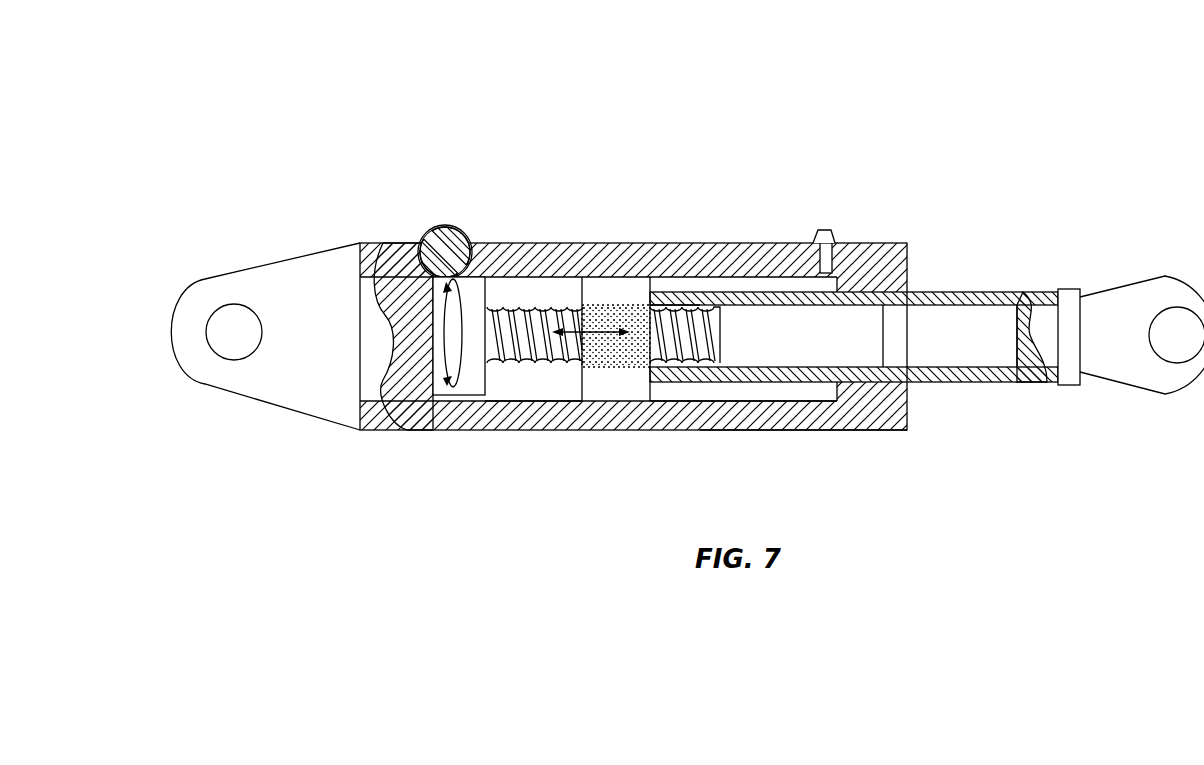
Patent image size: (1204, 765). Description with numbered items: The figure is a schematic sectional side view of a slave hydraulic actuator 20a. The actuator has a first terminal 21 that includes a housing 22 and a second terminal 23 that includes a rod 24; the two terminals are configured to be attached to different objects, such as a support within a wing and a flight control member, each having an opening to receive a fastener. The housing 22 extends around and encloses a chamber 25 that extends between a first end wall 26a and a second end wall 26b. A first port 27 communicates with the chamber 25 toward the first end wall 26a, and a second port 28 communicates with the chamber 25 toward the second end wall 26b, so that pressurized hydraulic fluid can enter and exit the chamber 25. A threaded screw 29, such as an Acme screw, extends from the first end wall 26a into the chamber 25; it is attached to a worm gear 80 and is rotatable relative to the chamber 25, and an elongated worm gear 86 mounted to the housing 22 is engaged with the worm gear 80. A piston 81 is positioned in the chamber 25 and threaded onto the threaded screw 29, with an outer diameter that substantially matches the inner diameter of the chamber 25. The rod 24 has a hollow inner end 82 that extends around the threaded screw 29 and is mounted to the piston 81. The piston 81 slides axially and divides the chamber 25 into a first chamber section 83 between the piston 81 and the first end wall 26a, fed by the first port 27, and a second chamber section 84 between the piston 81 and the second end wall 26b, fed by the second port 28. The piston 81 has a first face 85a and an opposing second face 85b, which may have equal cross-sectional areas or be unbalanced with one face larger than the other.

The slave hydraulic actuator 20a is at (383, 120).
The first terminal 21 is at (312, 242).
The housing 22 is at (708, 263).
The second terminal 23 is at (1048, 292).
The rod 24 is at (945, 292).
The chamber 25 is at (805, 392).
The first end wall 26a is at (402, 253).
The second end wall 26b is at (885, 262).
The first port 27 is at (447, 227).
The second port 28 is at (827, 230).
The threaded screw 29 is at (524, 310).
The worm gear 80 is at (471, 385).
The piston 81 is at (613, 385).
The inner end 82 is at (654, 292).
The first chamber section 83 is at (546, 385).
The second chamber section 84 is at (737, 390).
The first face 85a is at (582, 392).
The second face 85b is at (652, 390).
The elongated worm gear 86 is at (445, 227).